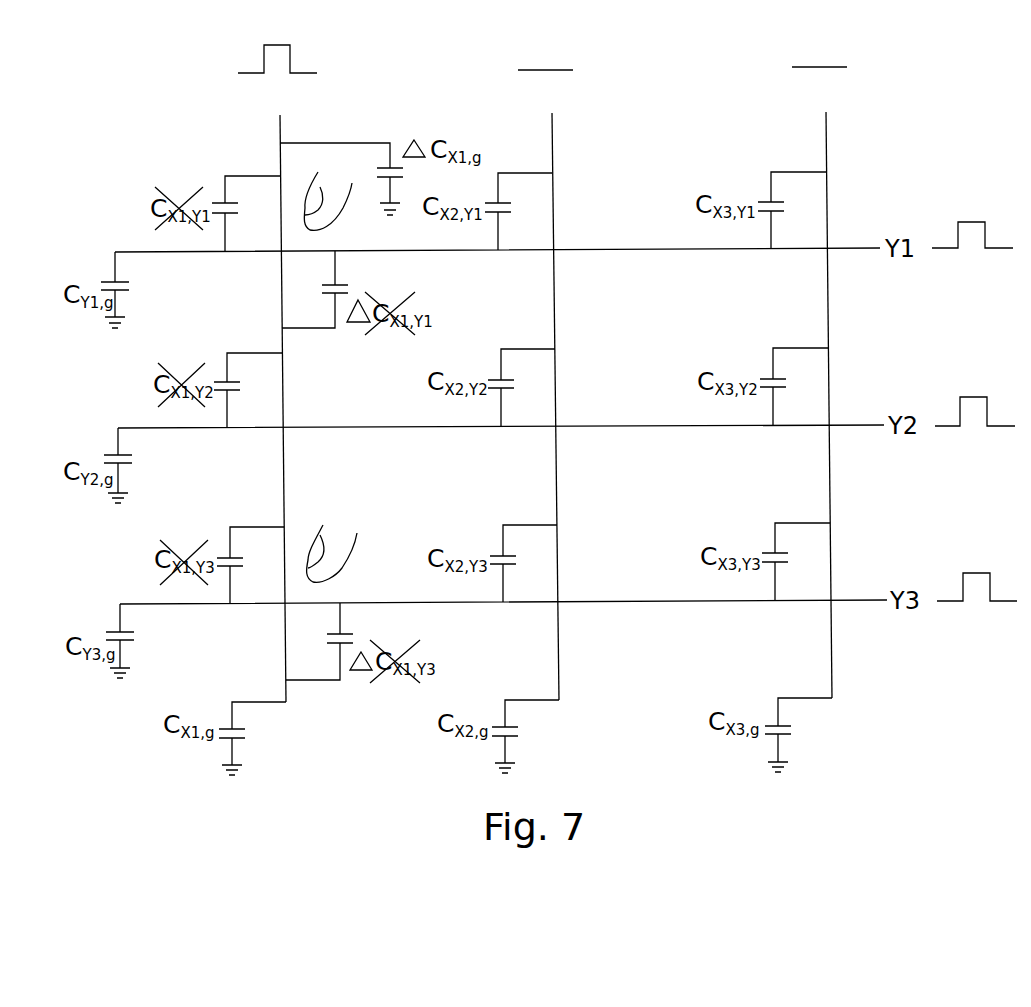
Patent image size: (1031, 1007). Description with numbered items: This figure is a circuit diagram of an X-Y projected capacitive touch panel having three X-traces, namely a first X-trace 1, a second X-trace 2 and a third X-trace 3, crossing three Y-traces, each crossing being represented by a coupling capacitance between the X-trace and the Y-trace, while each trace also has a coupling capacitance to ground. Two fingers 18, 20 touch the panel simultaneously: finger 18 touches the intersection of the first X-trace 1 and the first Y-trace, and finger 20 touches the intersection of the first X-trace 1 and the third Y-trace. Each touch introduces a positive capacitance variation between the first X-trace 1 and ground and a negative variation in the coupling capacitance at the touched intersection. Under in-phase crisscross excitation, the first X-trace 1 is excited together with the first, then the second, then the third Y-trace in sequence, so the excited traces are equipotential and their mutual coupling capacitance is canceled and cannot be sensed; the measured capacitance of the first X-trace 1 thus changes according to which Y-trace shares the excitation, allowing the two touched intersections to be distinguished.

The finger 18 is at (333, 226).
The finger 20 is at (340, 572).
The drive line X1 1 is at (277, 373).
The drive line X2 2 is at (545, 385).
The drive line X3 3 is at (819, 382).